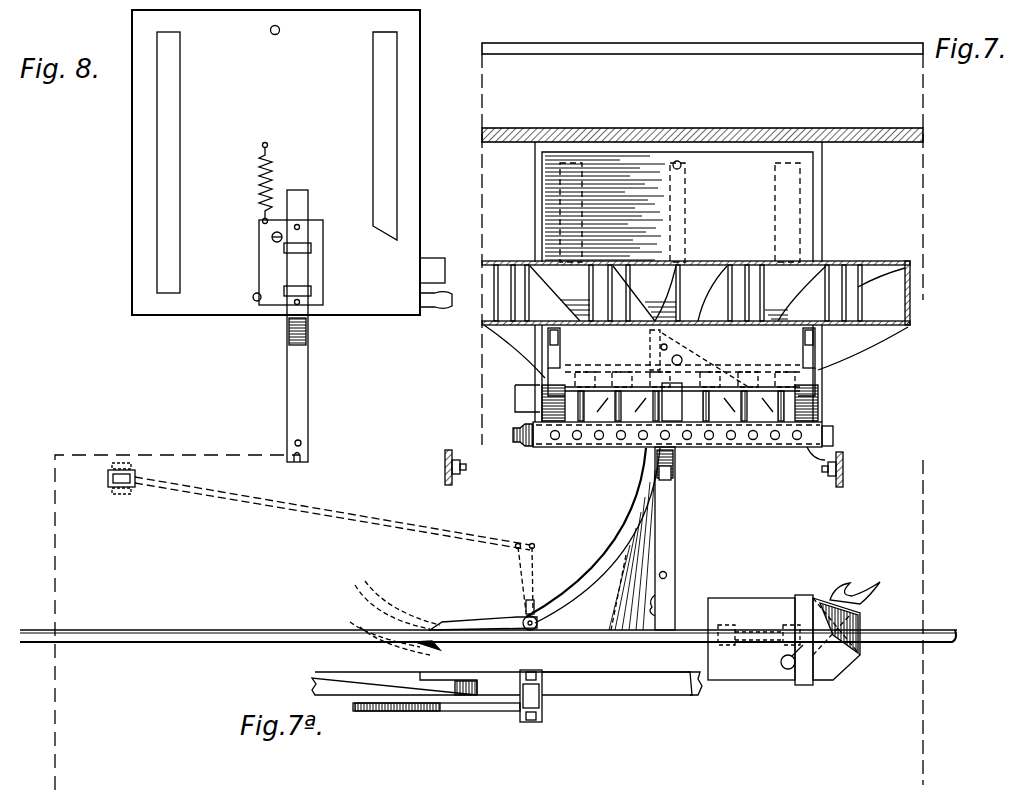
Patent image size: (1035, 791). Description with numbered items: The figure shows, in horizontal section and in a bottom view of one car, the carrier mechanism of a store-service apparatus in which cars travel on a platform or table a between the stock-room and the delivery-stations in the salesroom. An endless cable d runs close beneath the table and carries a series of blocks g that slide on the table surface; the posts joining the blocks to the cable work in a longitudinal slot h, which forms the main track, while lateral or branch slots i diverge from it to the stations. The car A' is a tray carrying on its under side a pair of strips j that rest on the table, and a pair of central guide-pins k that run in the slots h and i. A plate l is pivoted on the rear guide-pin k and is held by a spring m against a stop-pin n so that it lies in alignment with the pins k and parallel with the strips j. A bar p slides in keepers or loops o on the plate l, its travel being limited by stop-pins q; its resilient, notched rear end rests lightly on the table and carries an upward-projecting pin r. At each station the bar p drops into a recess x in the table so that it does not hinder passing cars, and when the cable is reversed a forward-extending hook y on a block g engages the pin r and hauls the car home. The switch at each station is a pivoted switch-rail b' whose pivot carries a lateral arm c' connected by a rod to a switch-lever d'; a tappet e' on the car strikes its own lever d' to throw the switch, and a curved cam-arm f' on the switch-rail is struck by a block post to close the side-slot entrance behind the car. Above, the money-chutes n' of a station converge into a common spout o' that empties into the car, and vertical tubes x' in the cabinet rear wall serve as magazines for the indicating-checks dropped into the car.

In FIG. 8, the car A' is at (292, 162).
In FIG. 7, the car A' is at (678, 202).
In FIG. 8, the strips j is at (170, 171).
In FIG. 8, the central guide-pins k is at (280, 32).
In FIG. 8, the spring m is at (272, 176).
In FIG. 8, the plate l is at (312, 268).
In FIG. 8, the keepers or loops o is at (294, 273).
In FIG. 8, the stop-pins q is at (300, 225).
In FIG. 8, the stop-pin n is at (240, 291).
In FIG. 8, the bar p is at (303, 378).
In FIG. 7, the bar p is at (677, 531).
In FIG. 8, the upward-projecting pin r is at (301, 442).
In FIG. 7, the upward-projecting pin r is at (668, 574).
In FIG. 7, the money-chute n' is at (696, 278).
In FIG. 7, the common spout or chute o' is at (696, 373).
In FIG. 7, the tappet e' is at (517, 387).
In FIG. 7, the vertical tube x' is at (654, 465).
In FIG. 7, the lateral or branch slots i is at (612, 535).
In FIG. 7, the recess x is at (645, 605).
In FIG. 7, the lateral arm c' is at (546, 585).
In FIG. 7A, the lateral arm c' is at (545, 720).
In FIG. 7, the switch-rail b' is at (483, 595).
In FIG. 7A, the switch-rail b' is at (507, 670).
In FIG. 7, the curved cam-arm f' is at (395, 601).
In FIG. 7A, the curved cam-arm f' is at (436, 728).
In FIG. 7, the slot h is at (255, 630).
In FIG. 7, the platform or table a is at (177, 622).
In FIG. 7, the switch-lever d' is at (319, 489).
In FIG. 7, the blocks g is at (748, 605).
In FIG. 7, the forward-extending hook y is at (855, 576).
In FIG. 7, the endless cable d is at (905, 661).